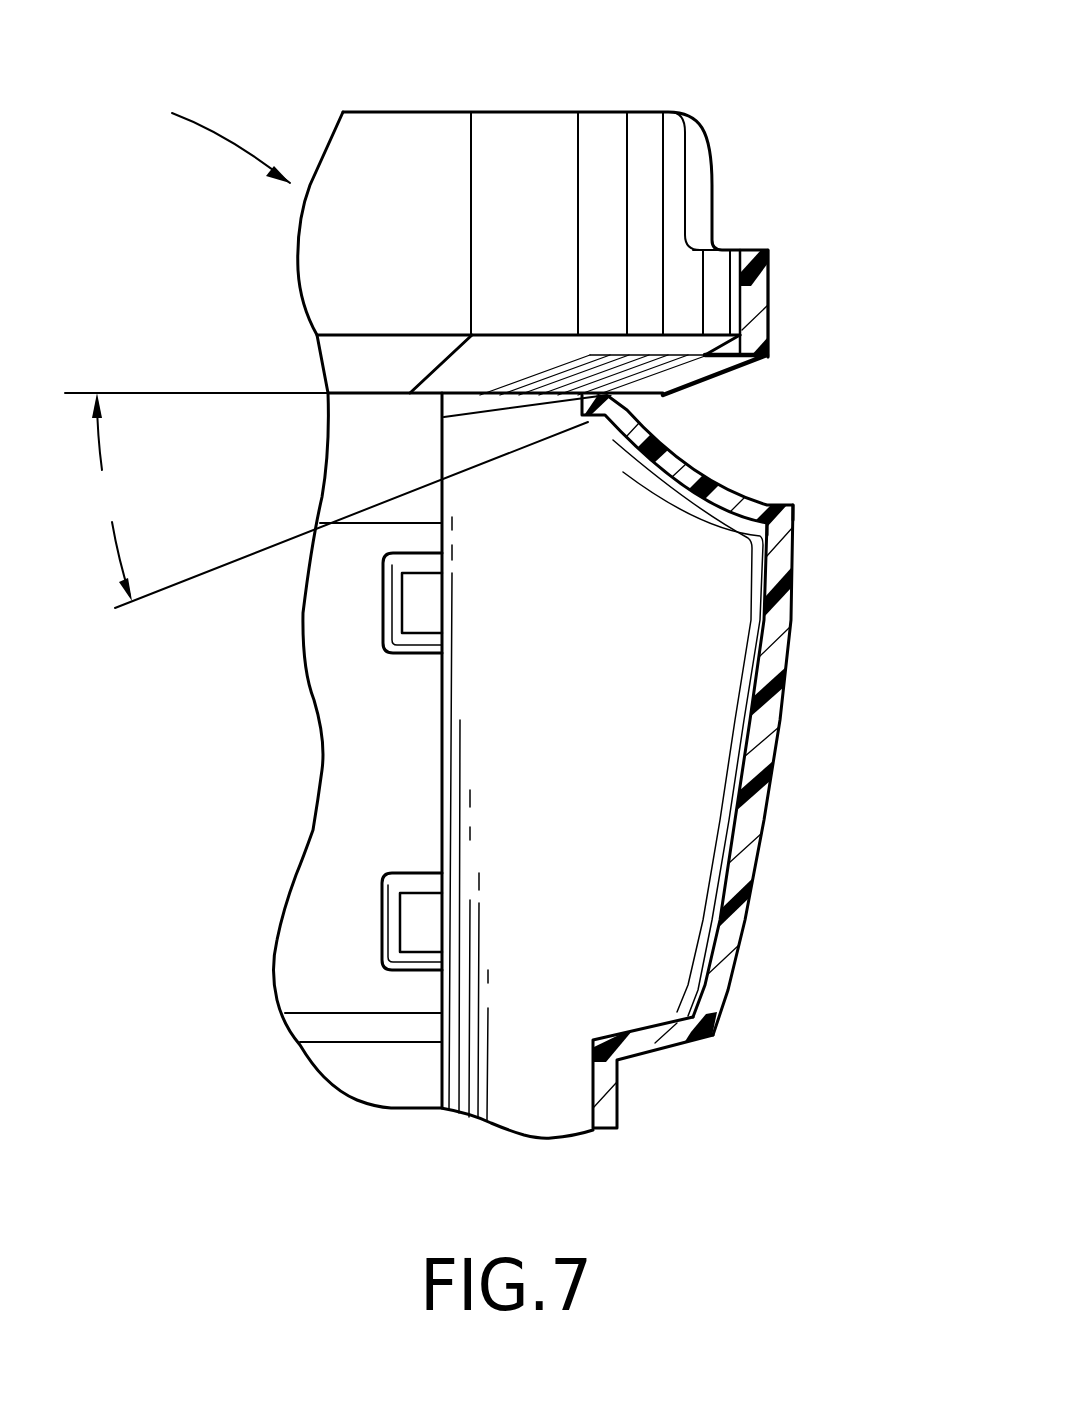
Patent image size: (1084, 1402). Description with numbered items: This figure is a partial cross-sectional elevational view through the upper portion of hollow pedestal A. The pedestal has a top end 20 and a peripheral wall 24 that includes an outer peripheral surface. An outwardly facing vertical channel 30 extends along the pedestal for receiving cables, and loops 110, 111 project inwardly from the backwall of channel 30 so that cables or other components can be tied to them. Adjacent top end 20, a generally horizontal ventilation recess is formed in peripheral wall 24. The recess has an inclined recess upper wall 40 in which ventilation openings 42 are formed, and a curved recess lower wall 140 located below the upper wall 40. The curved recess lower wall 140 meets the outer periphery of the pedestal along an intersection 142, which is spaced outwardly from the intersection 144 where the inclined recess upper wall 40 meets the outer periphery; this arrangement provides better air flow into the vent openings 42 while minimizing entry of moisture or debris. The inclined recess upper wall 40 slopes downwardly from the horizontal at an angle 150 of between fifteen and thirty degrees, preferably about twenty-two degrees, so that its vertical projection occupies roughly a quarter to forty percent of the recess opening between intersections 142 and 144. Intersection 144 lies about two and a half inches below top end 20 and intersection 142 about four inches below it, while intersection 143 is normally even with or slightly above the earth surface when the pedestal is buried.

The top end 20 is at (478, 112).
The peripheral wall 24 is at (767, 793).
The vertical channel 30 is at (439, 1075).
The inclined recess upper wall 40 is at (727, 363).
The ventilation openings 42 is at (650, 377).
The loop 110 is at (383, 607).
The loop 111 is at (383, 875).
The curved recess lower wall 140 is at (740, 497).
The intersection 142 is at (795, 505).
The intersection 143 is at (713, 1035).
The intersection 144 is at (770, 340).
The angle 150 is at (326, 500).
The hollow pedestal A is at (221, 134).